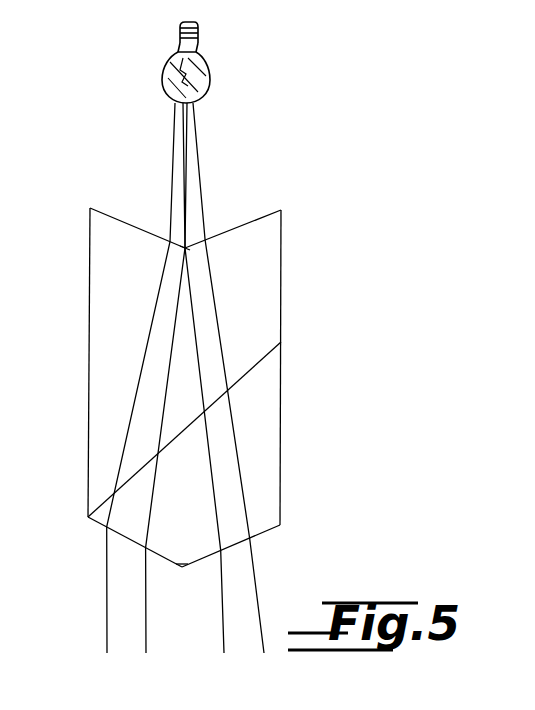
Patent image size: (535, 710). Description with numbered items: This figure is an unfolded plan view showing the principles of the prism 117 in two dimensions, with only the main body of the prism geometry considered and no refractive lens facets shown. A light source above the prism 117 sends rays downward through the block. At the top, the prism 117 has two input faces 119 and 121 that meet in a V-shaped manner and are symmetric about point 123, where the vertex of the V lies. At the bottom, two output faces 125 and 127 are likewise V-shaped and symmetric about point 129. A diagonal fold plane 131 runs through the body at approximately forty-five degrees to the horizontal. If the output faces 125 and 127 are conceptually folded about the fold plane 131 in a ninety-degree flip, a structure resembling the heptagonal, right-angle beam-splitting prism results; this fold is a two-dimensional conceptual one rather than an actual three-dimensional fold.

The prism 117 is at (193, 363).
The input face 119 is at (122, 222).
The input face 121 is at (241, 226).
The point of symmetry of input faces 123 is at (186, 246).
The output face 125 is at (100, 525).
The output face 127 is at (262, 531).
The point of symmetry of output faces 129 is at (182, 565).
The fold plane 131 is at (243, 377).